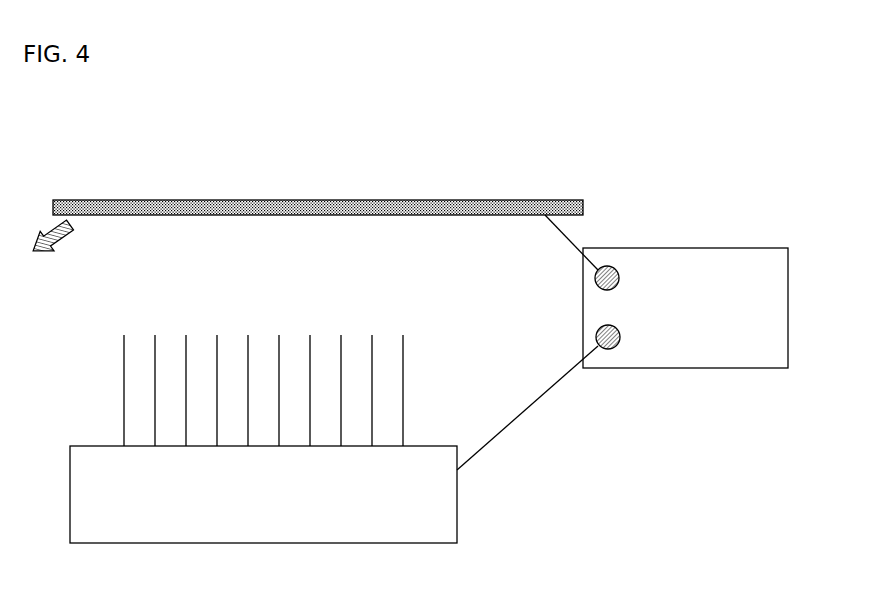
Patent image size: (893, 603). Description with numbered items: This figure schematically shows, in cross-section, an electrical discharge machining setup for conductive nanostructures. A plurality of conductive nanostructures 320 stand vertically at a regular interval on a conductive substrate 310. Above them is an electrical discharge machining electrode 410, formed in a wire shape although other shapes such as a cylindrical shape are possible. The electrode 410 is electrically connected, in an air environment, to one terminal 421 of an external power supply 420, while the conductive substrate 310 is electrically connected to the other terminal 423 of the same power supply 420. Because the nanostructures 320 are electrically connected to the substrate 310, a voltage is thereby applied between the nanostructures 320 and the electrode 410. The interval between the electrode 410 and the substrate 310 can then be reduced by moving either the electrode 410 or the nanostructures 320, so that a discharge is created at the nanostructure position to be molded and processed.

The conductive substrate 310 is at (440, 502).
The conductive nanostructure 320 is at (404, 372).
The electrical discharge machining electrode 410 is at (298, 200).
The external power supply 420 is at (724, 265).
The terminal 421 is at (612, 266).
The terminal 423 is at (614, 349).